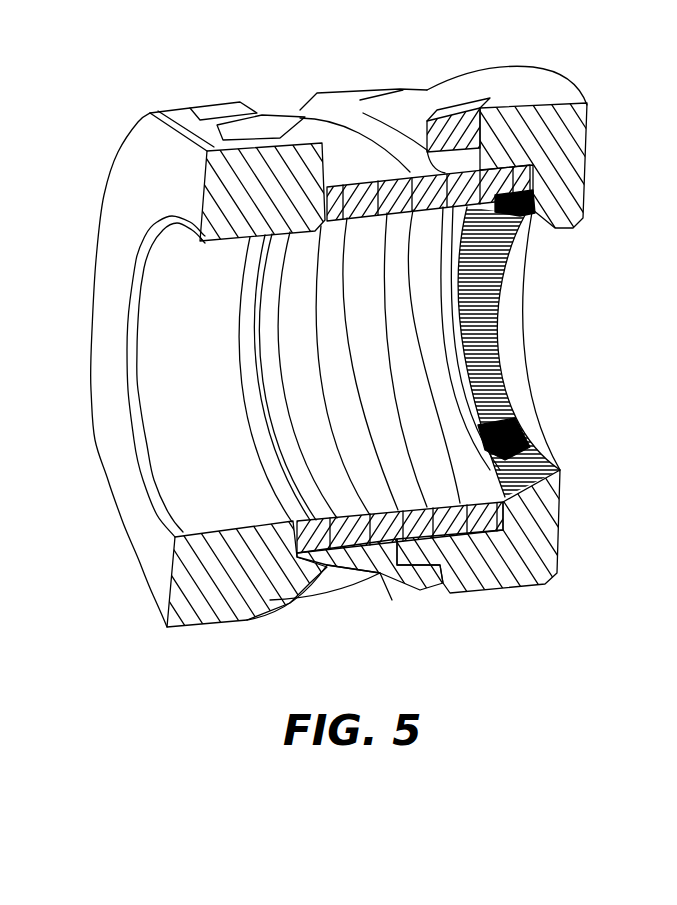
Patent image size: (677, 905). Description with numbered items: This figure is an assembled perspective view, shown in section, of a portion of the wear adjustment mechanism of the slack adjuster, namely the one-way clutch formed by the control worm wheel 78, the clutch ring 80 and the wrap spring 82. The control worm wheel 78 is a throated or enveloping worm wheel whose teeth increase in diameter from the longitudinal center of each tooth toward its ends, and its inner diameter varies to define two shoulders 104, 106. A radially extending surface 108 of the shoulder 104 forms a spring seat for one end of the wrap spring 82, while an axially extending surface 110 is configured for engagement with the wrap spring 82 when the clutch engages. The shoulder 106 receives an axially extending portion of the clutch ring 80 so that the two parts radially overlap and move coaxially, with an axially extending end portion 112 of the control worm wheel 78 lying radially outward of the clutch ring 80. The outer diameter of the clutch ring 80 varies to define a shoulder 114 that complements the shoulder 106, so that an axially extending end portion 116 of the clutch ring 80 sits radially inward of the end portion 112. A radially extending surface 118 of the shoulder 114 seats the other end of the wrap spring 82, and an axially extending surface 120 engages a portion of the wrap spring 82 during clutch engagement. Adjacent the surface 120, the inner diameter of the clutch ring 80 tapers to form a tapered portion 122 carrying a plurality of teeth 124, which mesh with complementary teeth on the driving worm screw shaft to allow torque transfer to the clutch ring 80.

The control worm wheel 78 is at (250, 190).
The clutch ring 80 is at (557, 130).
The wrap spring 82 is at (428, 472).
The shoulder 104 is at (328, 190).
The shoulder 106 is at (418, 135).
The radially extending surface 108 is at (303, 540).
The axially extending surface 110 is at (393, 600).
The axially extending end portion 112 is at (453, 123).
The shoulder 114 is at (483, 147).
The axially extending end portion 116 is at (510, 227).
The radially extending surface 118 is at (510, 507).
The axially extending surface 120 is at (470, 537).
The tapered portion 122 is at (543, 490).
The teeth 124 is at (500, 430).